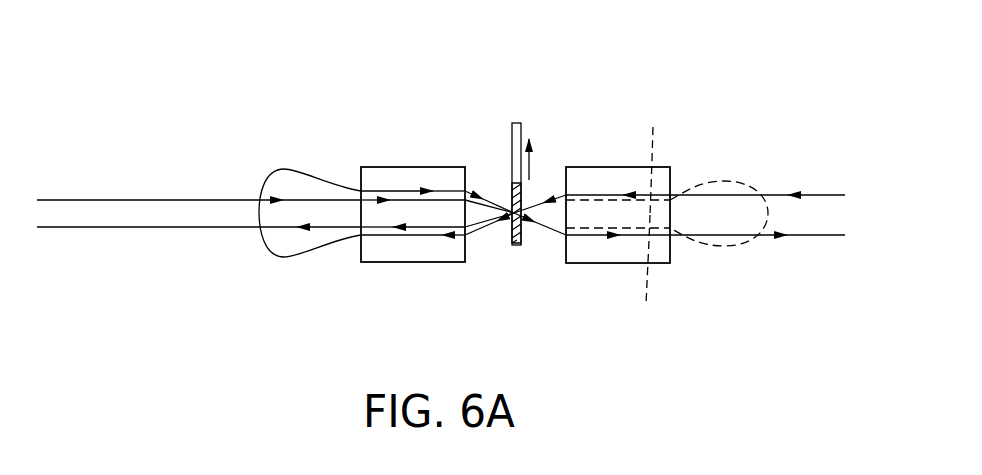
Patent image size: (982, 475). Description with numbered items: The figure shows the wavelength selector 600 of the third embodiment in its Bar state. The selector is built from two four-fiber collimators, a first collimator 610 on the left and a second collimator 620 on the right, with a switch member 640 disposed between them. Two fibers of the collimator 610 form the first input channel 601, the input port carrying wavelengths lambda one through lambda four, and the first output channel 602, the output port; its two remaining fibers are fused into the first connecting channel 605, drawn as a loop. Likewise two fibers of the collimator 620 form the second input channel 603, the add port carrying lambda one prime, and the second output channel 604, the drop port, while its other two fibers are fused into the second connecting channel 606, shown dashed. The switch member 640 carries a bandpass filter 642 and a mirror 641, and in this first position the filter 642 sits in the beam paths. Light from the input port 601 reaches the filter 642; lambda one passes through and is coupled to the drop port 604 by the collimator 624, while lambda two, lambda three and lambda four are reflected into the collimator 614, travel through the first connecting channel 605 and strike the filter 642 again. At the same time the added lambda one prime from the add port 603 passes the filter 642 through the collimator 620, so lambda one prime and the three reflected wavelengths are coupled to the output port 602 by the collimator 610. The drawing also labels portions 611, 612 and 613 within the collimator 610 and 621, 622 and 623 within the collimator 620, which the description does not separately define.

The wavelength selector 600 is at (112, 33).
The first input channel 601 is at (53, 199).
The first output channel 602 is at (53, 228).
The second input channel 603 is at (830, 194).
The second output channel 604 is at (828, 236).
The first connecting channel 605 is at (308, 169).
The second connecting channel 606 is at (733, 180).
The four-fiber collimator 610 is at (372, 165).
The first light path 611 is at (402, 199).
The second light path 612 is at (452, 236).
The third light path 613 is at (400, 236).
The collimator 614 is at (453, 190).
The four-fiber collimator 620 is at (572, 165).
The first dashed region 621 is at (657, 158).
The second dashed region 622 is at (647, 273).
The fifth light path 623 is at (600, 194).
The collimator 624 is at (589, 236).
The switch member 640 is at (515, 121).
The mirror 641 is at (511, 150).
The bandpass filter 642 is at (514, 246).